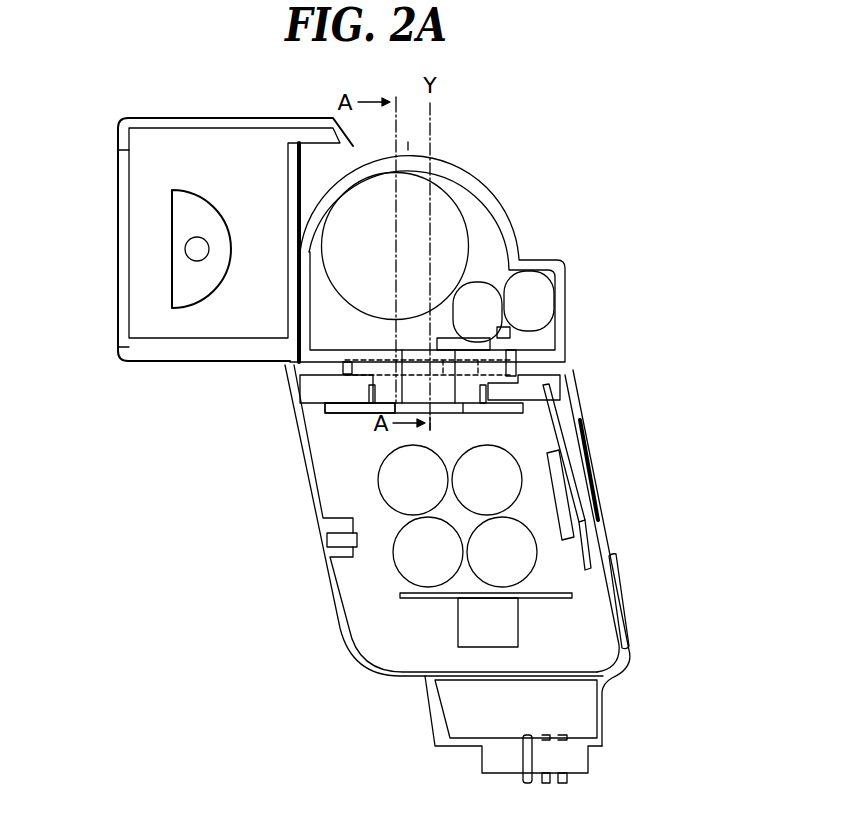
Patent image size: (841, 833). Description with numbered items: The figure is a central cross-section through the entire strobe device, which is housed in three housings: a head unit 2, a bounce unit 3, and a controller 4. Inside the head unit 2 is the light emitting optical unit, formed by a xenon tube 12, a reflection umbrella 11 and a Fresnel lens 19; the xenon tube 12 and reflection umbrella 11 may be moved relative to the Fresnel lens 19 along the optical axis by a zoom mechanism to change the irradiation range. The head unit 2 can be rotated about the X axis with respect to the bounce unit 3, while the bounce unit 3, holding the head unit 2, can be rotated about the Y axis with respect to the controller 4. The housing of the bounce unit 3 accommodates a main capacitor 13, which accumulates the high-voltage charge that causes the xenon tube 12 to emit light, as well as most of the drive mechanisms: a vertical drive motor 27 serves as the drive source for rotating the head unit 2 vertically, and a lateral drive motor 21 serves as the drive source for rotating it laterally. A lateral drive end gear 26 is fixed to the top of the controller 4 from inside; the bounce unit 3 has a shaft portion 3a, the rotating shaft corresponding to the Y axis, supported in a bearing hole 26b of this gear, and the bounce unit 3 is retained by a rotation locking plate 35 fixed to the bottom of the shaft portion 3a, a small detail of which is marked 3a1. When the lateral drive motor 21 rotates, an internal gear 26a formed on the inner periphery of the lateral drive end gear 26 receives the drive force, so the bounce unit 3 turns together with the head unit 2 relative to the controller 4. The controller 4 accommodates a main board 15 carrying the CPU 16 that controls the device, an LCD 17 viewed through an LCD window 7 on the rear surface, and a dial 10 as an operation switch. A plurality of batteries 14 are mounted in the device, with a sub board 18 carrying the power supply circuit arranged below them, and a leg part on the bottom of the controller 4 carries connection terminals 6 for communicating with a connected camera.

The head unit 2 is at (232, 187).
The Fresnel lens 19 is at (121, 207).
The reflection umbrella 11 is at (187, 308).
The xenon tube 12 is at (186, 250).
The bounce unit 3 is at (497, 186).
The main capacitor 13 is at (443, 200).
The vertical drive motor 27 is at (493, 292).
The lateral drive motor 21 is at (542, 298).
The lateral drive end gear 26 is at (310, 383).
The internal gear 26a is at (518, 348).
The bearing hole 26b is at (371, 392).
The rotation locking plate 35 is at (348, 412).
The shaft portion 3a is at (486, 387).
The head mounting pin 3a1 is at (486, 395).
The controller 4 is at (368, 617).
The dial 10 is at (627, 600).
The batteries 14 is at (390, 485).
The sub board 18 is at (568, 592).
The LCD window 7 is at (585, 442).
The main board 15 is at (580, 550).
The LCD 17 is at (574, 472).
The CPU 16 is at (562, 498).
The connection terminals 6 is at (523, 758).